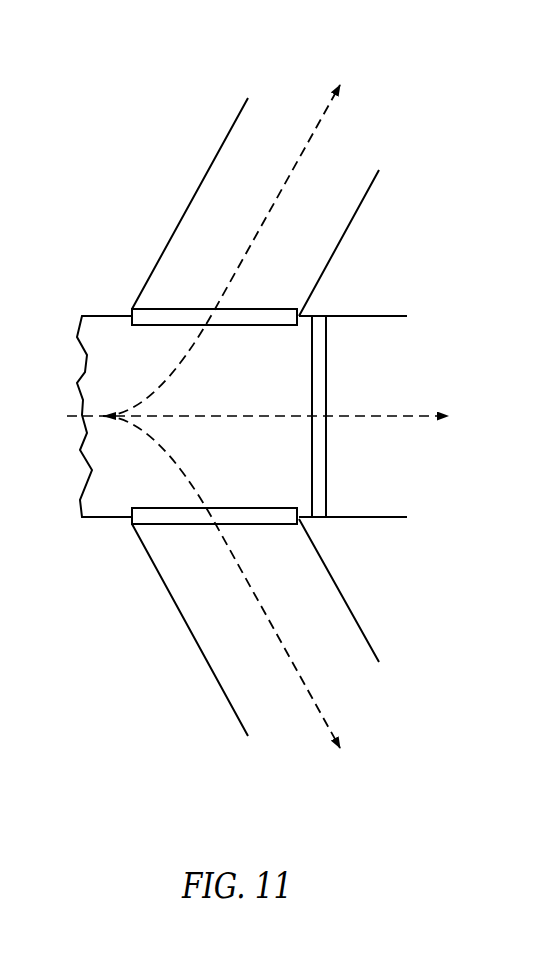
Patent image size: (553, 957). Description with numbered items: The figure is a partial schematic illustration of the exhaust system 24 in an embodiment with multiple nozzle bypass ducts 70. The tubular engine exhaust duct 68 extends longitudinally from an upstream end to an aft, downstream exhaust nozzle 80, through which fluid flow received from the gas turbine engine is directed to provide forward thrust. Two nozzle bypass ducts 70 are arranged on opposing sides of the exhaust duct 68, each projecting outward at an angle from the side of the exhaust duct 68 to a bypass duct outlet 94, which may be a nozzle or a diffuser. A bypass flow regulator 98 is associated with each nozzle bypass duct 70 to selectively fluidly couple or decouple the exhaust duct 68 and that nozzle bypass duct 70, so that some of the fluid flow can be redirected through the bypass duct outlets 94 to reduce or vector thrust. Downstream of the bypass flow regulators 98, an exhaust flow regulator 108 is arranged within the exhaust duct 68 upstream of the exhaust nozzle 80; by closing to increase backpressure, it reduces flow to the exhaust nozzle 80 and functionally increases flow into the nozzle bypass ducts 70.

The exhaust system 24 is at (208, 286).
The engine exhaust duct 68 is at (82, 306).
The nozzle bypass duct 70 is at (358, 234).
The exhaust nozzle 80 is at (397, 356).
The bypass duct outlet 94 is at (277, 113).
The bypass flow regulator 98 is at (182, 307).
The exhaust flow regulator 108 is at (335, 478).